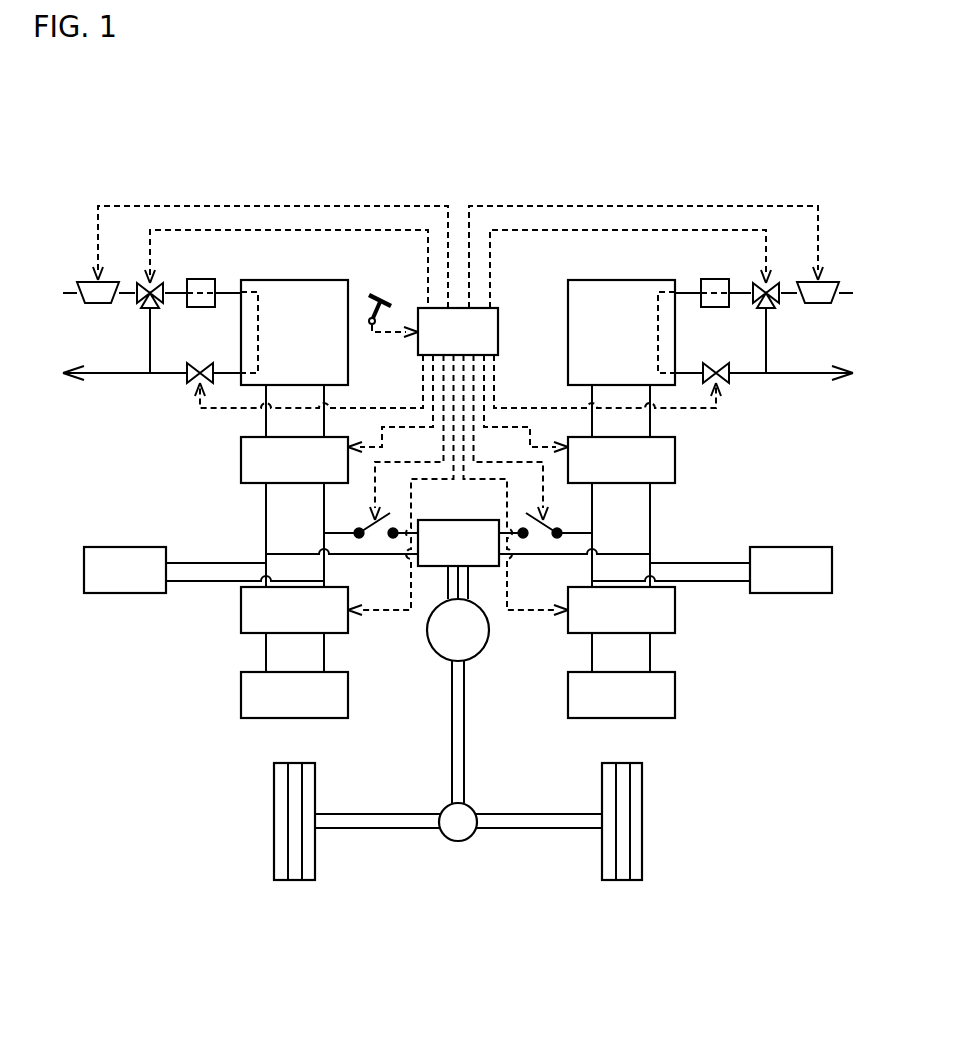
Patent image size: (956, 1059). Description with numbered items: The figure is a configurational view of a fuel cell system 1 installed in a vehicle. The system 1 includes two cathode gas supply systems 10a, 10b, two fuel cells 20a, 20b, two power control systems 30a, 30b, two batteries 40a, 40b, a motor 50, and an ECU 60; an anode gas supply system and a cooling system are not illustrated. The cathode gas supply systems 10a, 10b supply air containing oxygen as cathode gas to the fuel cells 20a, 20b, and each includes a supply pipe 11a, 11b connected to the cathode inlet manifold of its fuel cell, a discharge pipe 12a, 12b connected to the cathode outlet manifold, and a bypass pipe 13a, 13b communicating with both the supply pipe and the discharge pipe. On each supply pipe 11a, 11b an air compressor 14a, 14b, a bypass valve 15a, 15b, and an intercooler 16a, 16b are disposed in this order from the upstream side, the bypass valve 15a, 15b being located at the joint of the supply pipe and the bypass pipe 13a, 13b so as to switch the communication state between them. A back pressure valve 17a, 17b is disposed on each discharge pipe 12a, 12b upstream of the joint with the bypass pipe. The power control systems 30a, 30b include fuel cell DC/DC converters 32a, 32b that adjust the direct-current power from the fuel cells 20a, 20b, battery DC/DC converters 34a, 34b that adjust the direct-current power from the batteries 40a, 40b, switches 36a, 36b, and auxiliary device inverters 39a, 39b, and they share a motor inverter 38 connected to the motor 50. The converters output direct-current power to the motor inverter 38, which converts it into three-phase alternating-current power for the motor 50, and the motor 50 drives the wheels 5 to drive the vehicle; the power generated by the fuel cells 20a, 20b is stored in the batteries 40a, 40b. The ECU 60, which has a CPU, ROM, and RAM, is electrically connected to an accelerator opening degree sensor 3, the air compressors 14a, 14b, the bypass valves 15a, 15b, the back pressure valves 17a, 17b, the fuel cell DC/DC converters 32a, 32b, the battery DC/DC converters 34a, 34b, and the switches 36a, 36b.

The fuel cell system 1 is at (795, 156).
The accelerator opening degree sensor 3 is at (370, 327).
The wheels 5 is at (274, 850).
The cathode gas supply system 10a is at (103, 415).
The cathode gas supply system 10b is at (813, 415).
The supply pipe 11a is at (222, 297).
The supply pipe 11b is at (694, 297).
The discharge pipe 12a is at (164, 376).
The discharge pipe 12b is at (752, 376).
The bypass pipe 13a is at (150, 350).
The bypass pipe 13b is at (766, 350).
The air compressor 14a is at (78, 281).
The air compressor 14b is at (838, 281).
The bypass valve 15a is at (141, 300).
The bypass valve 15b is at (775, 300).
The intercooler 16a is at (205, 279).
The intercooler 16b is at (711, 279).
The back pressure valve 17a is at (196, 365).
The back pressure valve 17b is at (720, 365).
The fuel cell 20a is at (322, 280).
The fuel cell 20b is at (594, 280).
The power control system 30a is at (120, 661).
The power control system 30b is at (796, 661).
The fuel cell DC/DC converter 32a is at (241, 463).
The fuel cell DC/DC converter 32b is at (675, 463).
The battery DC/DC converter 34a is at (241, 613).
The battery DC/DC converter 34b is at (675, 613).
The switch 36a is at (372, 519).
The switch 36b is at (544, 519).
The motor inverter 38 is at (478, 520).
The auxiliary device inverter 39a is at (106, 547).
The auxiliary device inverter 39b is at (810, 547).
The battery 40a is at (241, 698).
The battery 40b is at (675, 698).
The motor 50 is at (488, 640).
The ECU 60 is at (498, 325).